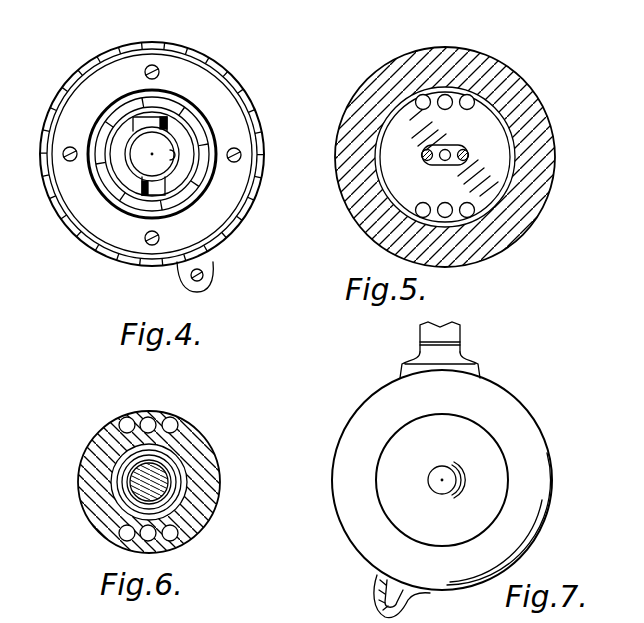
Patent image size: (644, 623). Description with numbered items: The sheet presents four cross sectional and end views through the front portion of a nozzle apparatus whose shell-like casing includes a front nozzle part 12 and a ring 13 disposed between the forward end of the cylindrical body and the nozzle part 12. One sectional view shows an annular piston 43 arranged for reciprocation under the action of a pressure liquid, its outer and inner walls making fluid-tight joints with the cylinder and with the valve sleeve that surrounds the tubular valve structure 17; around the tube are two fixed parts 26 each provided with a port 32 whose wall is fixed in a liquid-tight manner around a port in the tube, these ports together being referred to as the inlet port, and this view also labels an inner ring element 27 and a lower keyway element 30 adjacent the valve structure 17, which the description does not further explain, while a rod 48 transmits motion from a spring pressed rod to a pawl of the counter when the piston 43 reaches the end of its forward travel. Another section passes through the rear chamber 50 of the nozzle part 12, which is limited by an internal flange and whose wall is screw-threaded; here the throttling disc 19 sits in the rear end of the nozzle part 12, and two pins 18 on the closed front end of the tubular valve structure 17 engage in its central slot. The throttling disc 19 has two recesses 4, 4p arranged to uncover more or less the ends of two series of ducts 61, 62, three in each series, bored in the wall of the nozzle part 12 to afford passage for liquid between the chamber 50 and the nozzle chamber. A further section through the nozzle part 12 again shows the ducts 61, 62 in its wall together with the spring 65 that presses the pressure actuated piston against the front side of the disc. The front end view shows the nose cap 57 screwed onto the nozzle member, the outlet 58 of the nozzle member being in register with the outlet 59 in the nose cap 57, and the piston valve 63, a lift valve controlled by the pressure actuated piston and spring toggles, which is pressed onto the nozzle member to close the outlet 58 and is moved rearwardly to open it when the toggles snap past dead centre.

In FIG. 4, the ring 13 is at (209, 62).
In FIG. 4, the annular piston 43 is at (217, 103).
In FIG. 4, the fixed parts 26 is at (112, 118).
In FIG. 4, the inner ring 27 is at (113, 178).
In FIG. 4, the tubular valve structure 17 is at (169, 156).
In FIG. 4, the port 32 is at (167, 128).
In FIG. 4, the lower keyway 30 is at (153, 188).
In FIG. 4, the rod 48 is at (207, 266).
In FIG. 5, the front nozzle part 12 is at (480, 60).
In FIG. 6, the front nozzle part 12 is at (190, 442).
In FIG. 7, the front nozzle part 12 is at (523, 440).
In FIG. 5, the ducts 61 is at (420, 93).
In FIG. 6, the ducts 61 is at (168, 414).
In FIG. 5, the throttling disc 19 is at (452, 122).
In FIG. 5, the recess 4 is at (456, 104).
In FIG. 5, the rear chamber 50 is at (515, 202).
In FIG. 5, the ducts 62 is at (447, 217).
In FIG. 6, the ducts 62 is at (172, 540).
In FIG. 5, the recess 4p is at (469, 222).
In FIG. 5, the pins 18 is at (470, 157).
In FIG. 6, the spring 65 is at (112, 456).
In FIG. 7, the nose cap 57 is at (495, 472).
In FIG. 7, the outlet 58 is at (432, 470).
In FIG. 7, the outlet 59 is at (458, 488).
In FIG. 7, the piston valve 63 is at (440, 483).